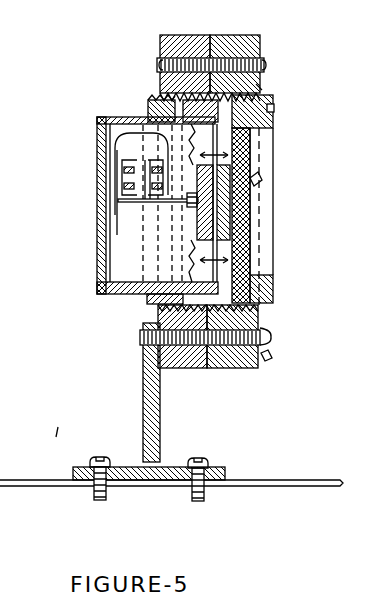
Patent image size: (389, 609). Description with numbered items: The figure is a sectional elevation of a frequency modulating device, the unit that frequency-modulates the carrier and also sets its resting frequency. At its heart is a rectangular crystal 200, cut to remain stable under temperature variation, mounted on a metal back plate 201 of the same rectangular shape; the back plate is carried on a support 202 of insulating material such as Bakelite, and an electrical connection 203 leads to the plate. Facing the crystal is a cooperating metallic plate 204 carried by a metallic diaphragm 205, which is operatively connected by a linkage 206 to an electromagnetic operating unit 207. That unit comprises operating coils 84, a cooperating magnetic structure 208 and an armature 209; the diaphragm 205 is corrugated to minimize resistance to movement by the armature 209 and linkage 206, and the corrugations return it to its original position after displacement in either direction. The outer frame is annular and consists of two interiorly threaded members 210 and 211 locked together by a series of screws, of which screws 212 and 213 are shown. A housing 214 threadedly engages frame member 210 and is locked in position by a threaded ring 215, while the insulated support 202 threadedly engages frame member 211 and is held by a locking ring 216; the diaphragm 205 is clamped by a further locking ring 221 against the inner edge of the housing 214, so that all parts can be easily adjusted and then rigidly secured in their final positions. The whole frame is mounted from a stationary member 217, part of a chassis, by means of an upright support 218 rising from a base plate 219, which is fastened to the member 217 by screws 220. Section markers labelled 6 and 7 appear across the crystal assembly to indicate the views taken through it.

The interiorly threaded member 210 is at (190, 35).
The interiorly threaded member 211 is at (226, 35).
The screw 212 is at (264, 62).
The locking ring 221 is at (260, 84).
The threaded ring 215 is at (152, 96).
The cooperating metallic plate 204 is at (256, 93).
The locking ring 216 is at (274, 109).
The armature 209 is at (100, 118).
The metallic diaphragm 205 is at (140, 116).
The housing 214 is at (100, 268).
The electromagnetic operating unit 207 is at (120, 149).
The cooperating magnetic structure 208 is at (118, 162).
The operating coils 84 is at (112, 168).
The linkage 206 is at (157, 203).
The section line 7 is at (213, 210).
The section line 6 is at (226, 208).
The crystal 200 is at (241, 152).
The metal back plate 201 is at (231, 165).
The electrical connection 203 is at (262, 180).
The support 202 is at (252, 232).
The upright support 218 is at (160, 412).
The screw 213 is at (272, 338).
The base plate 219 is at (227, 469).
The stationary member 217 is at (303, 487).
The screws 220 is at (99, 457).